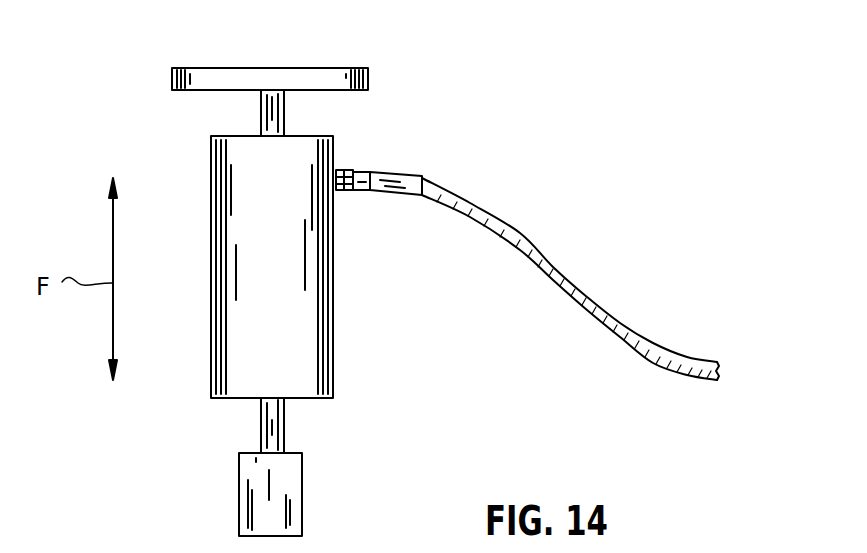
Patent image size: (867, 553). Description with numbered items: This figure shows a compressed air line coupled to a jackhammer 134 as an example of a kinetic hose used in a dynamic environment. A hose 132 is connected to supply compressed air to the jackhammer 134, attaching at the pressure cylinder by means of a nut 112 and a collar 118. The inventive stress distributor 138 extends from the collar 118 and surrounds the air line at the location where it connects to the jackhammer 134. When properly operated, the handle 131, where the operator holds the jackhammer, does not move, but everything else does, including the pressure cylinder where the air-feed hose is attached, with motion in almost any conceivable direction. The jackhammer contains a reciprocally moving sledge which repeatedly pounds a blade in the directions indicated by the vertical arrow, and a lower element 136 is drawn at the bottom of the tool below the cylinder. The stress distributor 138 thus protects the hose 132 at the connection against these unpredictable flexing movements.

The handle 131 is at (313, 69).
The jackhammer 134 is at (335, 303).
The base block 136 is at (303, 485).
The nut 112 is at (343, 171).
The collar 118 is at (365, 172).
The stress distributor 138 is at (410, 172).
The hose 132 is at (605, 307).